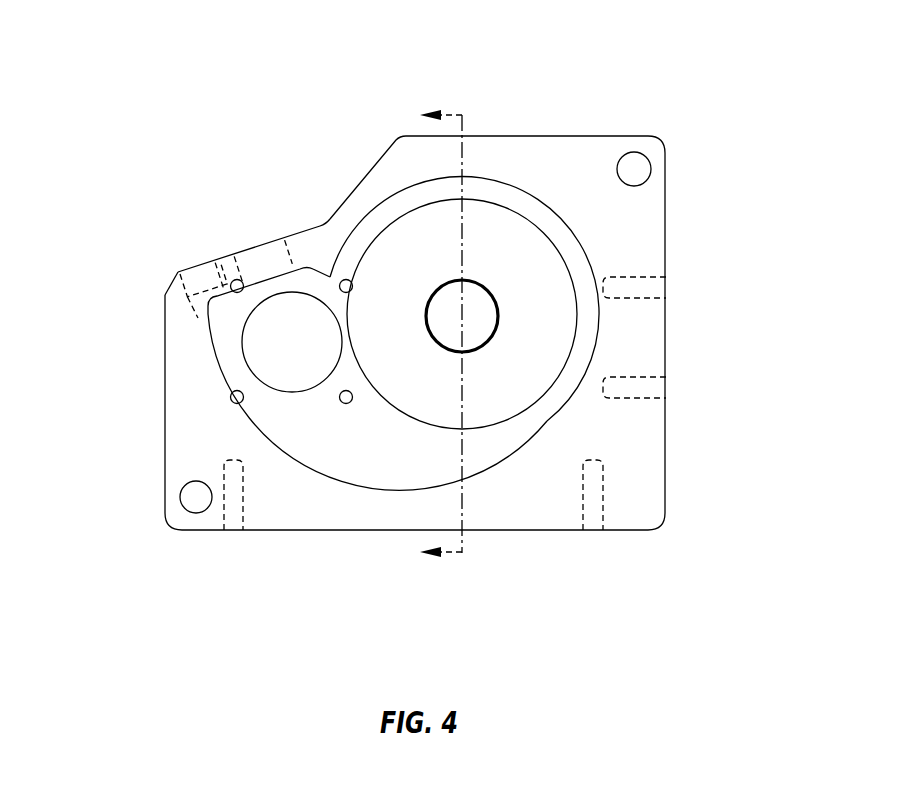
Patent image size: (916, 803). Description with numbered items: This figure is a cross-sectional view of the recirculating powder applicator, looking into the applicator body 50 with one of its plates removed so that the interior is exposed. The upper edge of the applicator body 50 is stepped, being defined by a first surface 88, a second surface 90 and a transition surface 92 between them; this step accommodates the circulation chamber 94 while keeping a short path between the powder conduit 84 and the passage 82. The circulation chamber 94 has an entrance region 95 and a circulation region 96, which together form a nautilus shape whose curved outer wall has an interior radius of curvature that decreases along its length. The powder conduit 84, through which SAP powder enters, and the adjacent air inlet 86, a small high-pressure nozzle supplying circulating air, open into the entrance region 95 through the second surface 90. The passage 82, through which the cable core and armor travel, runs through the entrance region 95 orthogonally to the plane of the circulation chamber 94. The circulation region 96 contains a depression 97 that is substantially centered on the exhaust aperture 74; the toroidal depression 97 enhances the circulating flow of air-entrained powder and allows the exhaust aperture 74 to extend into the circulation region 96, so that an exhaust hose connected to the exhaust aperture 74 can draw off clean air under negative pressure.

The applicator body 50 is at (472, 305).
The exhaust aperture 74 is at (500, 319).
The passage 82 is at (284, 336).
The powder conduit 84 is at (282, 243).
The air inlet 86 is at (206, 268).
The first surface 88 is at (543, 137).
The second surface 90 is at (178, 273).
The transition surface 92 is at (353, 190).
The circulation chamber 94 is at (549, 387).
The entrance region 95 is at (298, 458).
The circulation region 96 is at (590, 267).
The depression 97 is at (540, 223).